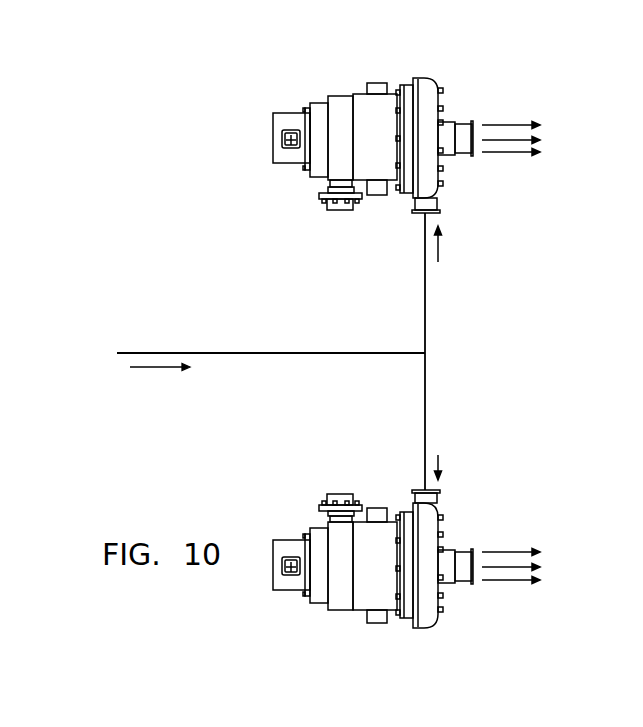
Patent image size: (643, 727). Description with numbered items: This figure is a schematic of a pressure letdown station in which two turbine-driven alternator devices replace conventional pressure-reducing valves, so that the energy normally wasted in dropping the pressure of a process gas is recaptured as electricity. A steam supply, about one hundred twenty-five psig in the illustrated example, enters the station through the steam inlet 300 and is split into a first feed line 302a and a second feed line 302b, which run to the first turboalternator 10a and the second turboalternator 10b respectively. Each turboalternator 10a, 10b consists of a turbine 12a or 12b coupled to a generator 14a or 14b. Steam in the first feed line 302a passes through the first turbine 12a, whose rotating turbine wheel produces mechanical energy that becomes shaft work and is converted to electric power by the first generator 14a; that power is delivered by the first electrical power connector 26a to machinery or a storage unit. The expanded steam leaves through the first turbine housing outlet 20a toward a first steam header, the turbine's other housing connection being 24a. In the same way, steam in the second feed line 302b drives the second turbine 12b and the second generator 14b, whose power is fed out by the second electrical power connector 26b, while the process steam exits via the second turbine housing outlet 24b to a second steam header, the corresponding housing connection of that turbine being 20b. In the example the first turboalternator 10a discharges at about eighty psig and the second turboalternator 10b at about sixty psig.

The first turboalternator 10a is at (283, 86).
The second turboalternator 10b is at (285, 491).
The first turbine 12a is at (425, 82).
The second turbine 12b is at (420, 619).
The first generator 14a is at (362, 105).
The second generator 14b is at (360, 600).
The first turbine housing outlet 20a is at (434, 213).
The steam inlet 20b is at (432, 491).
The steam outlet 24a is at (470, 130).
The second turbine housing outlet 24b is at (470, 558).
The first electrical power connector 26a is at (338, 211).
The second electrical power connector 26b is at (338, 495).
The steam inlet 300 is at (213, 350).
The first feed line 302a is at (425, 302).
The second feed line 302b is at (425, 422).